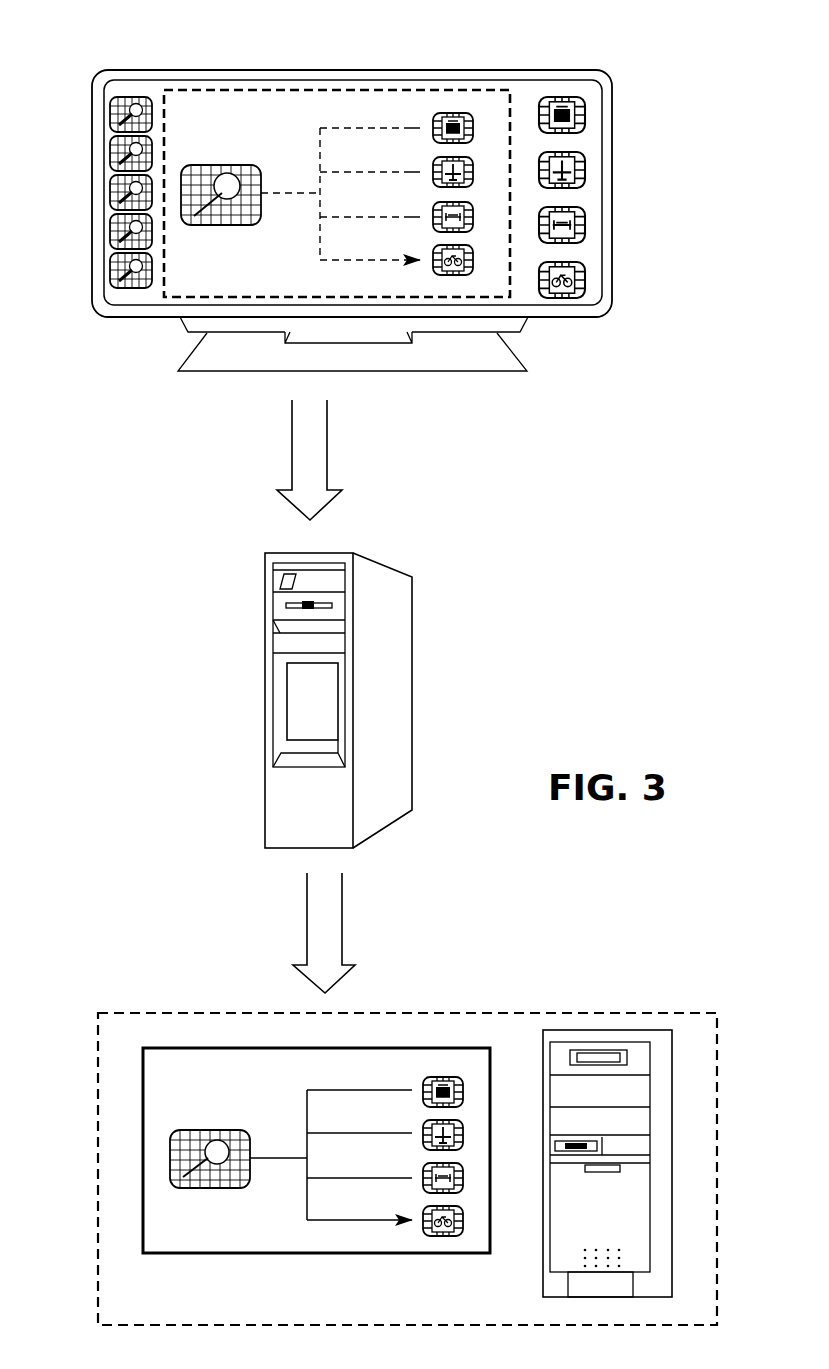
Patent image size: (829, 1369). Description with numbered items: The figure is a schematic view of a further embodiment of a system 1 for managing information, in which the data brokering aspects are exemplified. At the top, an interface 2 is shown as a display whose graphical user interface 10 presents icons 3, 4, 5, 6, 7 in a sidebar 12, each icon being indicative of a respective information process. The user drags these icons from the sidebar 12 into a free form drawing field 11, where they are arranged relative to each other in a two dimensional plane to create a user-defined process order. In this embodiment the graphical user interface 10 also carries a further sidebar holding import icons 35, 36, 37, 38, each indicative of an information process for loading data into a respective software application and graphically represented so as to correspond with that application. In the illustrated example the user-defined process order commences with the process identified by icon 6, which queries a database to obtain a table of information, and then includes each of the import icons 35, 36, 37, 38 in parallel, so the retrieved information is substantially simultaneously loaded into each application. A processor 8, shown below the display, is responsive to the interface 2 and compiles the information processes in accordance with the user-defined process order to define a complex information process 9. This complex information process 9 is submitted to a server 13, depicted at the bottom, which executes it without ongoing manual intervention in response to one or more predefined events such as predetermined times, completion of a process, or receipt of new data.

The system 1 is at (545, 463).
The interface 2 is at (302, 48).
The icon 3 is at (112, 114).
The icon 4 is at (112, 153).
The icon 5 is at (112, 193).
The icon 6 is at (112, 232).
The icon 7 is at (112, 271).
The processor 8 is at (393, 668).
The complex information process 9 is at (405, 1072).
The graphical user interface 10 is at (222, 125).
The free form drawing field 11 is at (195, 283).
The sidebar 12 is at (128, 88).
The server 13 is at (441, 1099).
The import icon 35 is at (586, 110).
The import icon 36 is at (586, 166).
The import icon 37 is at (586, 222).
The import icon 38 is at (586, 285).